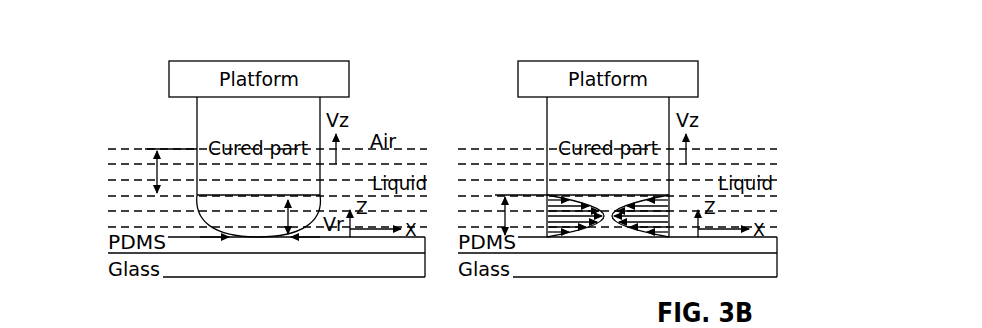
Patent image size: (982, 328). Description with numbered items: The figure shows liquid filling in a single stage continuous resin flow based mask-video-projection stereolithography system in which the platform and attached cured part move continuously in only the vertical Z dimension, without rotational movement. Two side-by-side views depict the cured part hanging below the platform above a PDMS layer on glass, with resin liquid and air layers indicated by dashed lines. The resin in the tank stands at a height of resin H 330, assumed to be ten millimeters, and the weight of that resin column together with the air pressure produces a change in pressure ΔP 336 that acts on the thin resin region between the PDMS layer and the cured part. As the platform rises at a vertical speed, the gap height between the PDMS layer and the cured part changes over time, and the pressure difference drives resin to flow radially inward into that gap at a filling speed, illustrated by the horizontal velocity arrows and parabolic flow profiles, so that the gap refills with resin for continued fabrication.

The height of resin H 330 is at (143, 164).
The change in pressure ΔP 336 is at (245, 240).